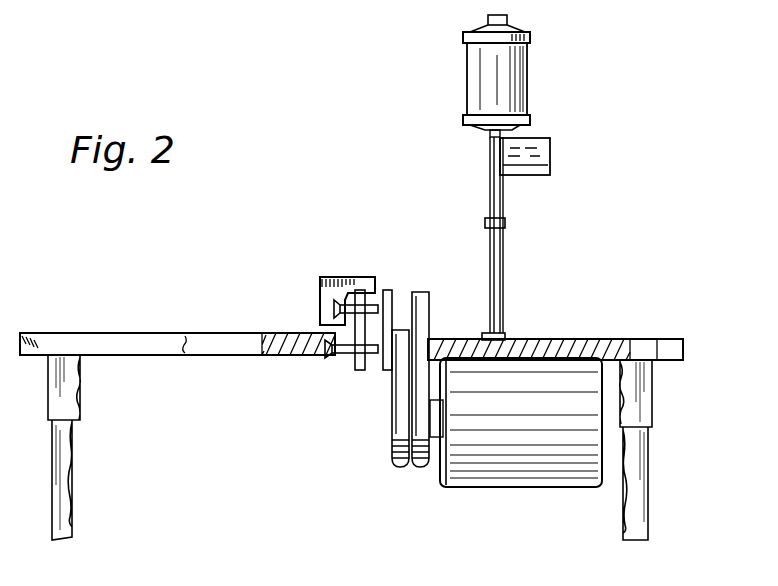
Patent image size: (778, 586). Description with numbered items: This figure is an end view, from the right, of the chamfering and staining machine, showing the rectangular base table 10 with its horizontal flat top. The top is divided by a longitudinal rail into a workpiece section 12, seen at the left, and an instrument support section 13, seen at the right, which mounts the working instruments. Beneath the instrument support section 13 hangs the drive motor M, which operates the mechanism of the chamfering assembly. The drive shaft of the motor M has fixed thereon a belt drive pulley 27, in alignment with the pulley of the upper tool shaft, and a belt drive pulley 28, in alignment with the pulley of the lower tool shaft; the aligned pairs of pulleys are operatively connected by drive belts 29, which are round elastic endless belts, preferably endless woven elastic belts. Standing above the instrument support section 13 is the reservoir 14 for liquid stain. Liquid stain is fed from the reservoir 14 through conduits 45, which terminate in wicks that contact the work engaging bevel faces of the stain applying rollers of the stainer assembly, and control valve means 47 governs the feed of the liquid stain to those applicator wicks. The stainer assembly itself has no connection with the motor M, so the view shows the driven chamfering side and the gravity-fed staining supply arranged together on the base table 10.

The base table 10 is at (70, 300).
The workpiece section 12 is at (168, 333).
The instrument support section 13 is at (583, 339).
The reservoir 14 is at (470, 89).
The belt drive pulley 27 is at (425, 468).
The belt drive pulley 28 is at (392, 452).
The drive belts 29 is at (432, 332).
The conduits 45 is at (490, 246).
The control valve means 47 is at (552, 150).
The drive motor M is at (497, 488).